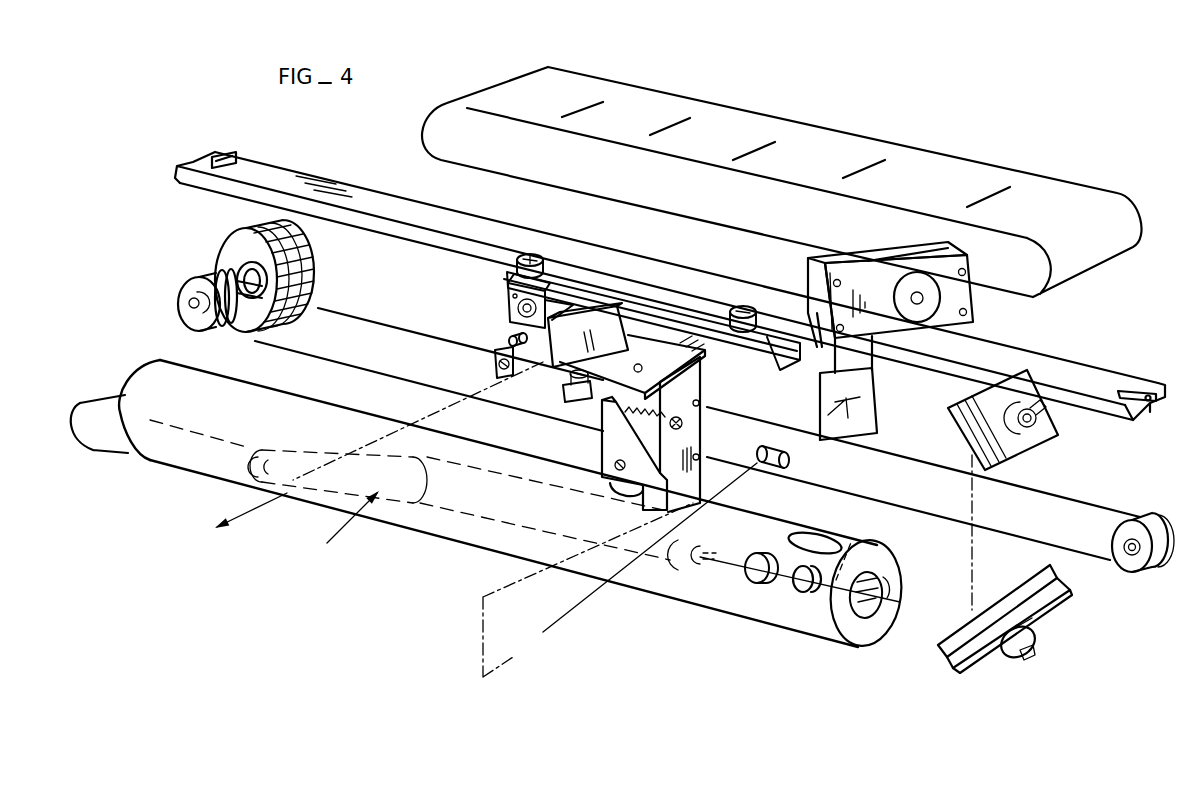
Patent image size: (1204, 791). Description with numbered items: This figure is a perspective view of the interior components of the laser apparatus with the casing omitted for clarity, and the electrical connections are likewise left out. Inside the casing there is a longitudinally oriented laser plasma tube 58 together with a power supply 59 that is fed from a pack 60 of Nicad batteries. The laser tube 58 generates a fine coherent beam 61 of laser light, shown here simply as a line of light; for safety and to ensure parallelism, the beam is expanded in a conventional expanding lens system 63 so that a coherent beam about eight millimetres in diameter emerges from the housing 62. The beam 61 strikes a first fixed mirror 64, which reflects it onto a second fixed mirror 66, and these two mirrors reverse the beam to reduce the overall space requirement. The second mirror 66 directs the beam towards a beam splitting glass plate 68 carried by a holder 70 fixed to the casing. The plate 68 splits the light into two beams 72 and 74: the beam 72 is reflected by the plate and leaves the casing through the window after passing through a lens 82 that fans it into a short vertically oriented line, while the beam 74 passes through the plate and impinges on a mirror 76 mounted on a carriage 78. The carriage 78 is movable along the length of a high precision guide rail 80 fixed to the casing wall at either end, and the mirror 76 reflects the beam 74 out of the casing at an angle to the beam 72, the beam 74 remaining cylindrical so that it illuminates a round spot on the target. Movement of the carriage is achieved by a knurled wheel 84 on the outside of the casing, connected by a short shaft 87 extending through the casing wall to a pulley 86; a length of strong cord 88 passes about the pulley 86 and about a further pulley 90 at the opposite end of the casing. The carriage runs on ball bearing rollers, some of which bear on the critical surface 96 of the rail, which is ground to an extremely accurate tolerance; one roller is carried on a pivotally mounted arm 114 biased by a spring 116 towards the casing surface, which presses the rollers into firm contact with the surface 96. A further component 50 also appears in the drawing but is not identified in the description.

The tubular support 50 is at (443, 548).
The laser plasma tube 58 is at (346, 530).
The power supply 59 is at (193, 466).
The pack of Nicad batteries 60 is at (683, 102).
The coherent beam 61 is at (912, 607).
The housing 62 is at (772, 627).
The expanding lens system 63 is at (758, 594).
The first fixed mirror 64 is at (940, 653).
The second fixed mirror 66 is at (965, 447).
The beam splitting glass plate 68 is at (870, 397).
The holder 70 is at (896, 252).
The reflected beam 72 is at (541, 631).
The transmitted beam 74 is at (657, 343).
The mirror 76 is at (604, 316).
The carriage 78 is at (583, 445).
The high precision guide rail 80 is at (352, 188).
The lens 82 is at (790, 461).
The knurled wheel 84 is at (307, 268).
The pulley 86 is at (177, 309).
The short shaft 87 is at (243, 270).
The cord 88 is at (435, 338).
The further pulley 90 is at (1175, 534).
The critical surface 96 is at (428, 238).
The pivotally mounted arm 114 is at (542, 373).
The spring 116 is at (510, 337).